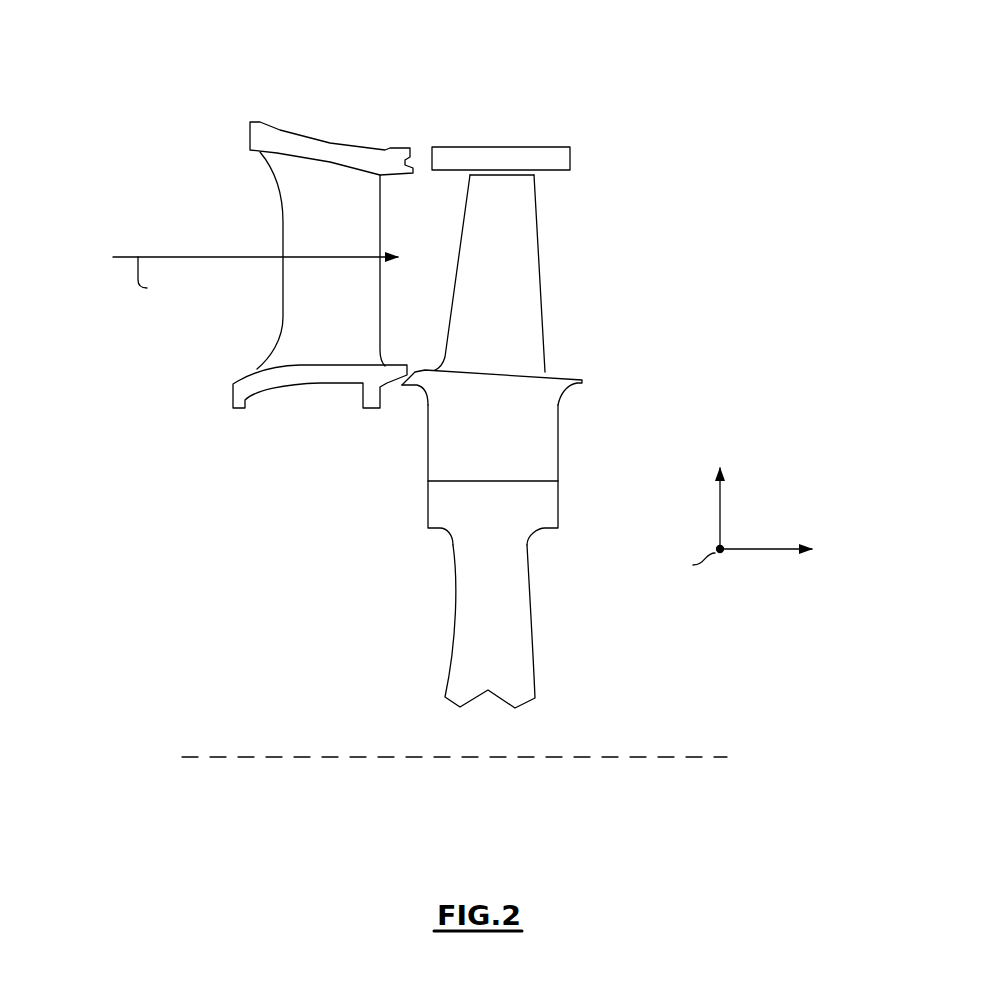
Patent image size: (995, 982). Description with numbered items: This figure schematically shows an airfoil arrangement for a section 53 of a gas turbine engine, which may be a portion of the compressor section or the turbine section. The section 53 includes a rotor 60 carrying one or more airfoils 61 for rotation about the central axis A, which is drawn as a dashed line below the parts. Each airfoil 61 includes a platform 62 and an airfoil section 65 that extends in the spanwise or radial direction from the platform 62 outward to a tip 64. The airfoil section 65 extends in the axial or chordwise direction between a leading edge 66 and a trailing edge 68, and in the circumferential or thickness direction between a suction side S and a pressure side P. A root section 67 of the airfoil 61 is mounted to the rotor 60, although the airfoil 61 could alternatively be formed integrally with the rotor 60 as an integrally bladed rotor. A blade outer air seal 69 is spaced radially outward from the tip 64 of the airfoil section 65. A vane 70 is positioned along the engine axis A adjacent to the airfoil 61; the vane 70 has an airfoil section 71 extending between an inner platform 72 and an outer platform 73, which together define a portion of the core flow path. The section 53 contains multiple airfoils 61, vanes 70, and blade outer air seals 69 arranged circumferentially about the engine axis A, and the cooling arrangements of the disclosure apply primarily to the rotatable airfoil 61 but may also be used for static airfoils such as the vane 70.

The section 53 is at (145, 77).
The rotor 60 is at (530, 572).
The airfoil 61 is at (594, 252).
The platform 62 is at (532, 372).
The tip 64 is at (482, 176).
The airfoil section 65 is at (528, 273).
The leading edge 66 is at (462, 225).
The root section 67 is at (558, 442).
The trailing edge 68 is at (542, 227).
The blade outer air seal 69 is at (550, 147).
The vane 70 is at (242, 200).
The airfoil section 71 is at (305, 302).
The inner platform 72 is at (233, 393).
The outer platform 73 is at (250, 135).
The pressure side P is at (462, 318).
The suction side S is at (545, 306).
The central axis A is at (640, 757).